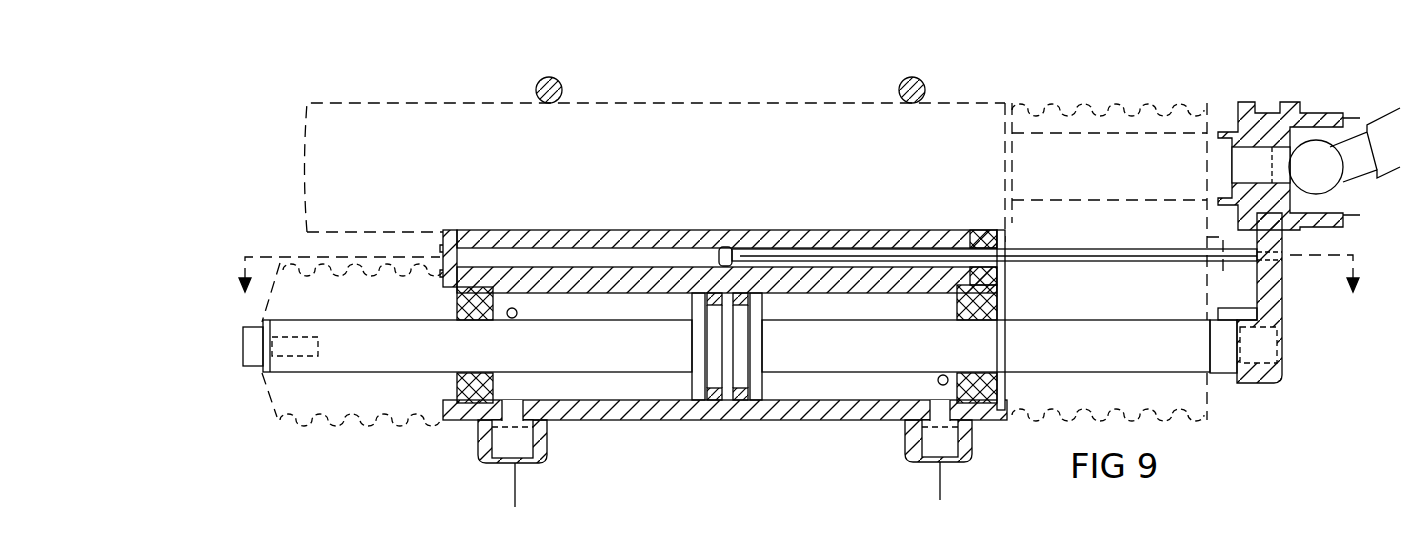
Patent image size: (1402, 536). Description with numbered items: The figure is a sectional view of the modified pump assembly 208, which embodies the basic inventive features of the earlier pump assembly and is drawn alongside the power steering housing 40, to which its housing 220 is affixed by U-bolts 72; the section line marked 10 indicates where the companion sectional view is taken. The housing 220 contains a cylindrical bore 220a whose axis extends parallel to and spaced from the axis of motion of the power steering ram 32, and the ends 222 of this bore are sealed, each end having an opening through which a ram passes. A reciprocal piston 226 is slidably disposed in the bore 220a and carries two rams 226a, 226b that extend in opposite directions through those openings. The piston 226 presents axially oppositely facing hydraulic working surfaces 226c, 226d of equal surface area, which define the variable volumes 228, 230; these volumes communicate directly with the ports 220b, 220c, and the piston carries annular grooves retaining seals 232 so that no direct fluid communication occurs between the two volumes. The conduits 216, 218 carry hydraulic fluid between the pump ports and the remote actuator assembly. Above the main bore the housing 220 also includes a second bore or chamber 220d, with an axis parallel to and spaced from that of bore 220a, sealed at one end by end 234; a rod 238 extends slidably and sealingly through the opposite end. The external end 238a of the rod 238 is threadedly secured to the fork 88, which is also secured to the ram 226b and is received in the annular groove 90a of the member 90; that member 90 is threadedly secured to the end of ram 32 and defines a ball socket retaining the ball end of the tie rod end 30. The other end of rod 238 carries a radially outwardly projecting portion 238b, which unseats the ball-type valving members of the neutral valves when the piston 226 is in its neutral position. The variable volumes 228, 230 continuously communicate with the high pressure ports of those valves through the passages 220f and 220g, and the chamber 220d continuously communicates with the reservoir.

The section line 10 is at (811, 286).
The tie rod end 30 is at (1363, 137).
The ram 32 is at (1070, 127).
The power steering housing 40 is at (722, 102).
The U-bolts 72 is at (537, 84).
The fork 88 is at (1283, 303).
The member 90 is at (1343, 218).
The annular groove 90a is at (1275, 102).
The pump assembly 208 is at (805, 346).
The conduit 216 is at (520, 480).
The conduit 218 is at (938, 478).
The housing 220 is at (703, 349).
The cylindrical bore 220a is at (903, 293).
The port 220b is at (500, 463).
The port 220c is at (952, 466).
The second bore 220d is at (555, 240).
The passage 220f is at (507, 317).
The passage 220g is at (940, 376).
The end 222 is at (452, 290).
The piston 226 is at (726, 379).
The ram 226a is at (580, 355).
The ram 226b is at (1073, 355).
The hydraulic working surface 226c is at (690, 305).
The hydraulic working surface 226d is at (765, 305).
The variable volume 228 is at (612, 317).
The variable volume 230 is at (862, 317).
The seals 232 is at (735, 393).
The end 234 is at (452, 252).
The rod 238 is at (1103, 270).
The end of rod 238a is at (1283, 260).
The radially outwardly projecting portion 238b is at (725, 247).